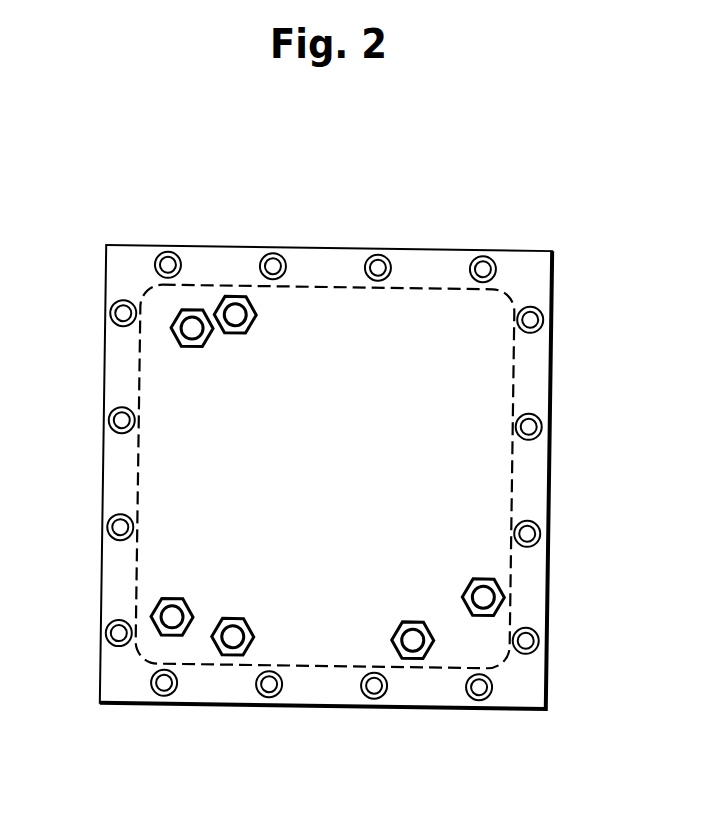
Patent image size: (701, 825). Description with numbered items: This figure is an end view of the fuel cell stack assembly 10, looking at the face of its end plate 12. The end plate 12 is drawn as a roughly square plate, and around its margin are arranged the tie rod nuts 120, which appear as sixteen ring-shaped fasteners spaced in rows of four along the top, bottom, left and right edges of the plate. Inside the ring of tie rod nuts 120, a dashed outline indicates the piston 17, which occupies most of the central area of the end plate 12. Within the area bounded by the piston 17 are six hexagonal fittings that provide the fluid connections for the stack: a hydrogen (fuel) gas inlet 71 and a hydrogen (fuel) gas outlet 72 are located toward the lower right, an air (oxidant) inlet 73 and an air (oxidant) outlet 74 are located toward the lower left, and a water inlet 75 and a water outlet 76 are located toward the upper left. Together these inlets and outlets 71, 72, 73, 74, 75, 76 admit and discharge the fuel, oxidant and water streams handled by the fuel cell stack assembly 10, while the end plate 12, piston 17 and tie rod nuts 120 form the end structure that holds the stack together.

The fuel cell stack assembly 10 is at (335, 477).
The end plate 12 is at (540, 257).
The piston 17 is at (139, 284).
The tie rod nuts 120 is at (267, 254).
The hydrogen gas inlet 71 is at (413, 637).
The hydrogen gas outlet 72 is at (483, 593).
The air inlet 73 is at (233, 633).
The air outlet 74 is at (172, 613).
The water inlet 75 is at (196, 331).
The water outlet 76 is at (240, 318).